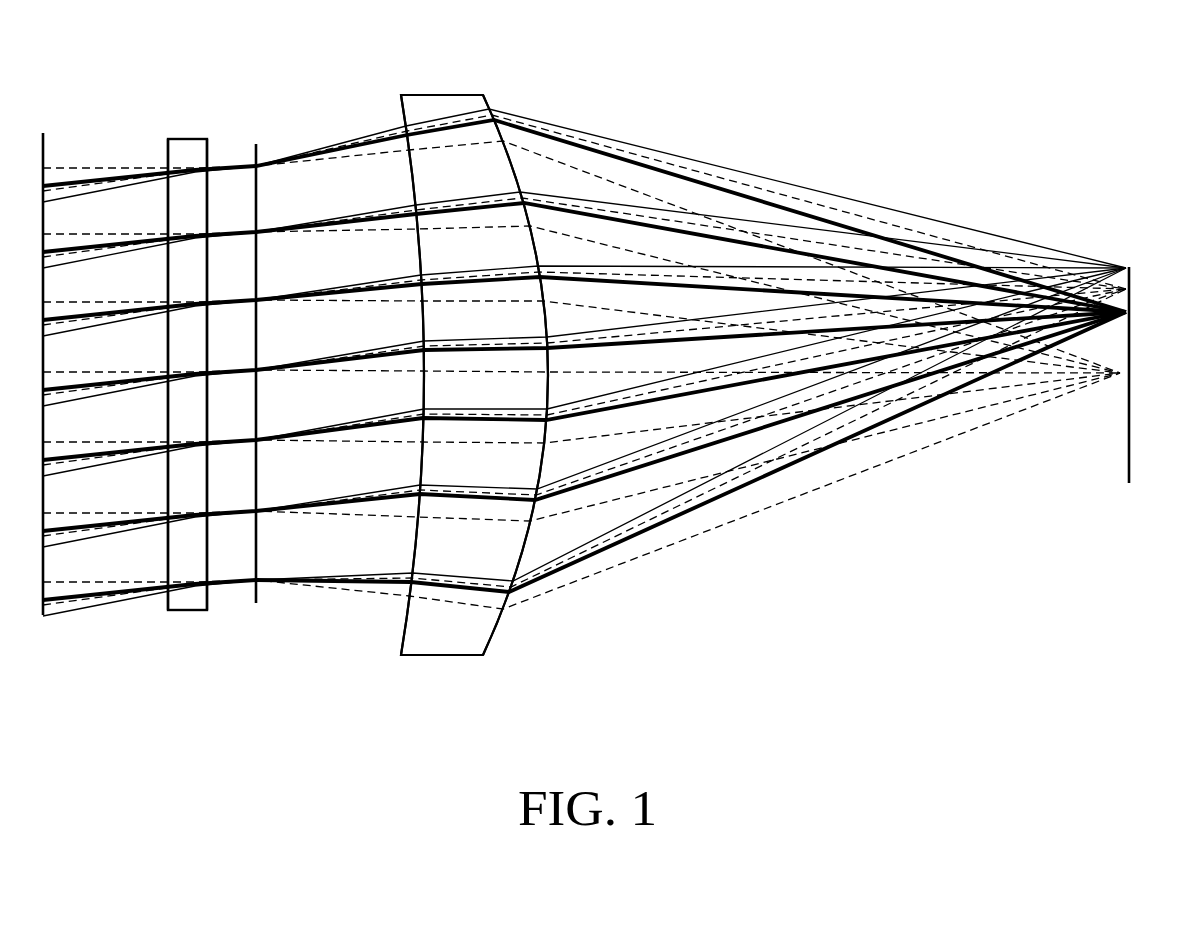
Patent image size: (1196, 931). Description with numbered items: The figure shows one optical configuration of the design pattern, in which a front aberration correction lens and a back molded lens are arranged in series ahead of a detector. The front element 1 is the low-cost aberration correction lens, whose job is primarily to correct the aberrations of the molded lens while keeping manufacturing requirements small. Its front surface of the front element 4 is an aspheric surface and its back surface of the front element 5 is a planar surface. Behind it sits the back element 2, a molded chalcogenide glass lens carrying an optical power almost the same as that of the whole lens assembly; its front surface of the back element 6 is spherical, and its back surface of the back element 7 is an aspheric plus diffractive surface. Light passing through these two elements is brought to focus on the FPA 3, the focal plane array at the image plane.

The front element 1 is at (188, 139).
The back element 2 is at (442, 95).
The FPA (Focal Plane Array) 3 is at (1131, 272).
The front surface of the front element 4 is at (167, 557).
The back surface of the front element 5 is at (208, 484).
The front surface of the back element 6 is at (414, 520).
The back surface of the back element 7 is at (543, 460).